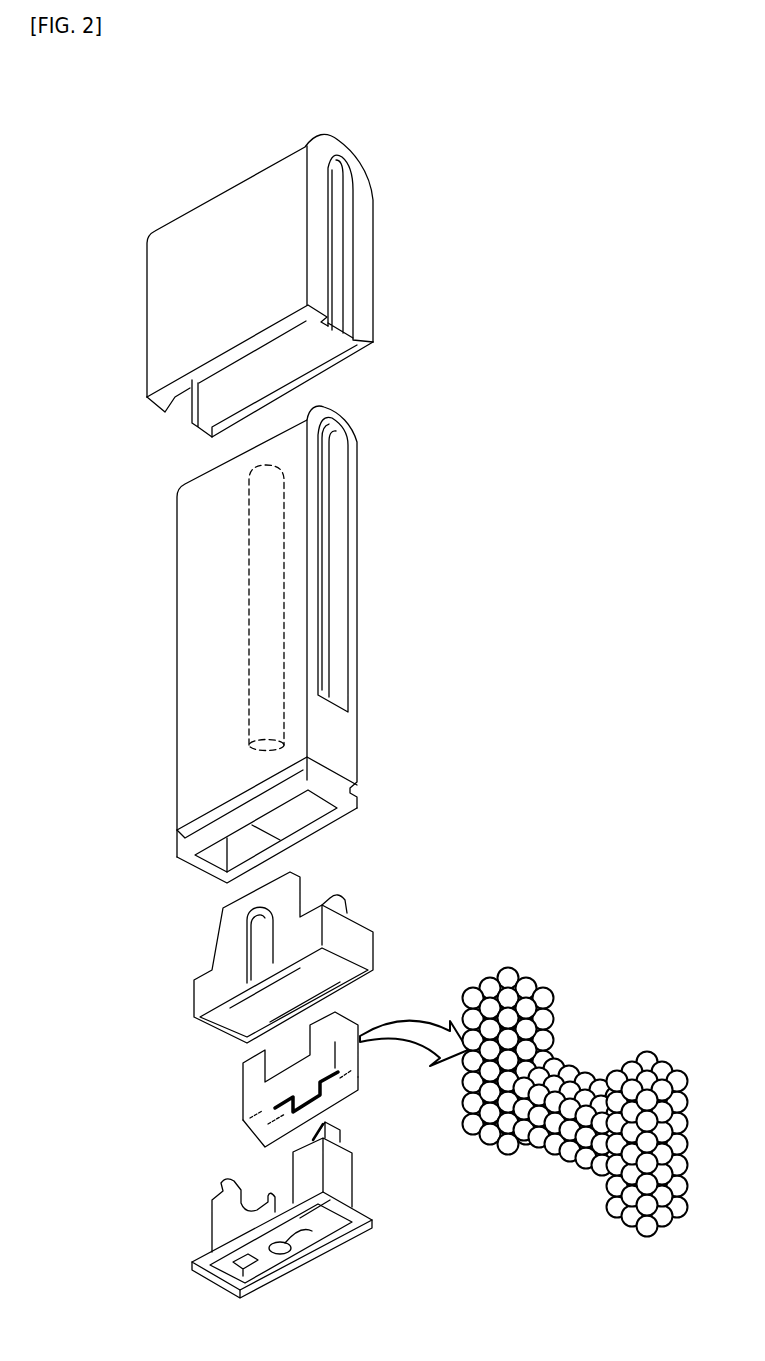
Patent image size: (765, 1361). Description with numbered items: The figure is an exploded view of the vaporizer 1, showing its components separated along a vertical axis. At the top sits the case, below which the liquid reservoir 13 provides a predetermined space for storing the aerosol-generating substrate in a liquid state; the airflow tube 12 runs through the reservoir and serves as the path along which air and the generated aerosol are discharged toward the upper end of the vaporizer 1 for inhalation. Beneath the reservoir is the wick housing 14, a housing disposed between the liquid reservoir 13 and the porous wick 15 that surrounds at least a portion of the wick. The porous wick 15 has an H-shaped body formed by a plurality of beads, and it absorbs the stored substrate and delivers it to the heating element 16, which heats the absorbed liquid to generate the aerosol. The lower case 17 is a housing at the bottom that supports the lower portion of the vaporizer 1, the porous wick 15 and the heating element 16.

The vaporizer 1 is at (462, 152).
The airflow tube 12 is at (248, 575).
The liquid reservoir 13 is at (357, 587).
The wick housing 14 is at (373, 940).
The porous wick 15 is at (243, 1072).
The heating element 16 is at (264, 1135).
The lower case 17 is at (224, 1237).